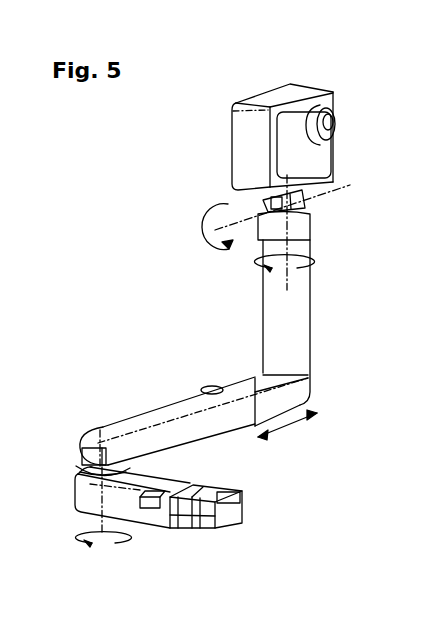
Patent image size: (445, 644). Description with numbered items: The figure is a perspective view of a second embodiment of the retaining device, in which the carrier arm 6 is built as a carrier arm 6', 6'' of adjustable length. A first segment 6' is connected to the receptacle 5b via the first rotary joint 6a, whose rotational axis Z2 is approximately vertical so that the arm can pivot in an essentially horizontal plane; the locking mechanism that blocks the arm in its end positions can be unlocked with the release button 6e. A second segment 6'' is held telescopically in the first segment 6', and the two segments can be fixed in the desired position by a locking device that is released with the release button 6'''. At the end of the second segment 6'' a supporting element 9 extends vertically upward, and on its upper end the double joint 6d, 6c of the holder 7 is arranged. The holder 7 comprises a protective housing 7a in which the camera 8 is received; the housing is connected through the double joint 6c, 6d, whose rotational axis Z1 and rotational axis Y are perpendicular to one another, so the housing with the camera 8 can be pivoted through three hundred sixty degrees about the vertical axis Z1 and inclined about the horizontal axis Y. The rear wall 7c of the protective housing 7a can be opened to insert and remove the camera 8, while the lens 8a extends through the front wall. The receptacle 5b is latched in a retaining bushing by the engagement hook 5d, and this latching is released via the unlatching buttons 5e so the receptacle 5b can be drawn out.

The receptacle 5b is at (224, 470).
The engagement hook 5d is at (192, 506).
The unlatching buttons 5e is at (150, 490).
The carrier arm 6 is at (168, 396).
The first segment 6' is at (194, 419).
The second segment 6'' is at (273, 384).
The release button 6''' is at (202, 369).
The first rotary joint 6a is at (78, 483).
The double joint 6c is at (262, 206).
The double joint 6d is at (312, 222).
The release button 6e is at (82, 456).
The holder 7 is at (345, 245).
The protective housing 7a is at (309, 88).
The rear wall 7c is at (231, 149).
The camera 8 is at (313, 162).
The lens 8a is at (330, 122).
The supporting element 9 is at (297, 320).
The horizontal rotational axis Y is at (261, 217).
The vertical rotational axis Z1 is at (296, 232).
The rotational axis Z2 is at (112, 546).